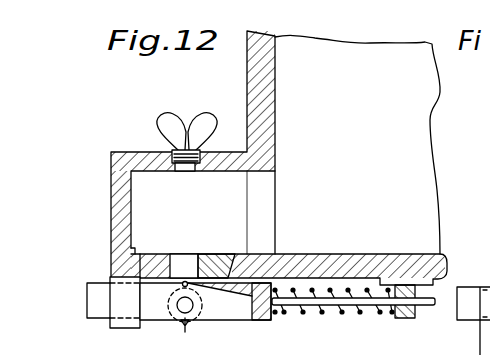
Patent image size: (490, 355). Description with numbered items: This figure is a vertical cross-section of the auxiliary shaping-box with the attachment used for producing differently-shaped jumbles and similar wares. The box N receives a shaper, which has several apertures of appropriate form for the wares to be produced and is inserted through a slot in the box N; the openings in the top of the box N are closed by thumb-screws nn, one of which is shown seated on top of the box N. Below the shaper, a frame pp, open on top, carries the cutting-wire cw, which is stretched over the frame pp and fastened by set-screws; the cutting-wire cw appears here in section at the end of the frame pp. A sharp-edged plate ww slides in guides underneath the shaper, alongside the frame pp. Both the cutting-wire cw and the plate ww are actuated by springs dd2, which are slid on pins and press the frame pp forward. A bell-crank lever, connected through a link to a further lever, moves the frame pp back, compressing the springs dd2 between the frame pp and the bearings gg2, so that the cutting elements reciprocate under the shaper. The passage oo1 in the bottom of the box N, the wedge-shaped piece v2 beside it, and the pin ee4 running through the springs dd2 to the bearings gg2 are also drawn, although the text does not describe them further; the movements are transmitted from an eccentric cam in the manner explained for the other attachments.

The box N is at (279, 158).
The thumb-screws nn is at (158, 126).
The slot oo1 is at (172, 270).
The wedge v2 is at (232, 258).
The frame pp is at (90, 303).
The sharp-edged plate ww is at (205, 301).
The cutting-wire cw is at (182, 287).
The springs dd2 is at (302, 316).
The bearings gg2 is at (396, 319).
The rod ee4 is at (433, 306).